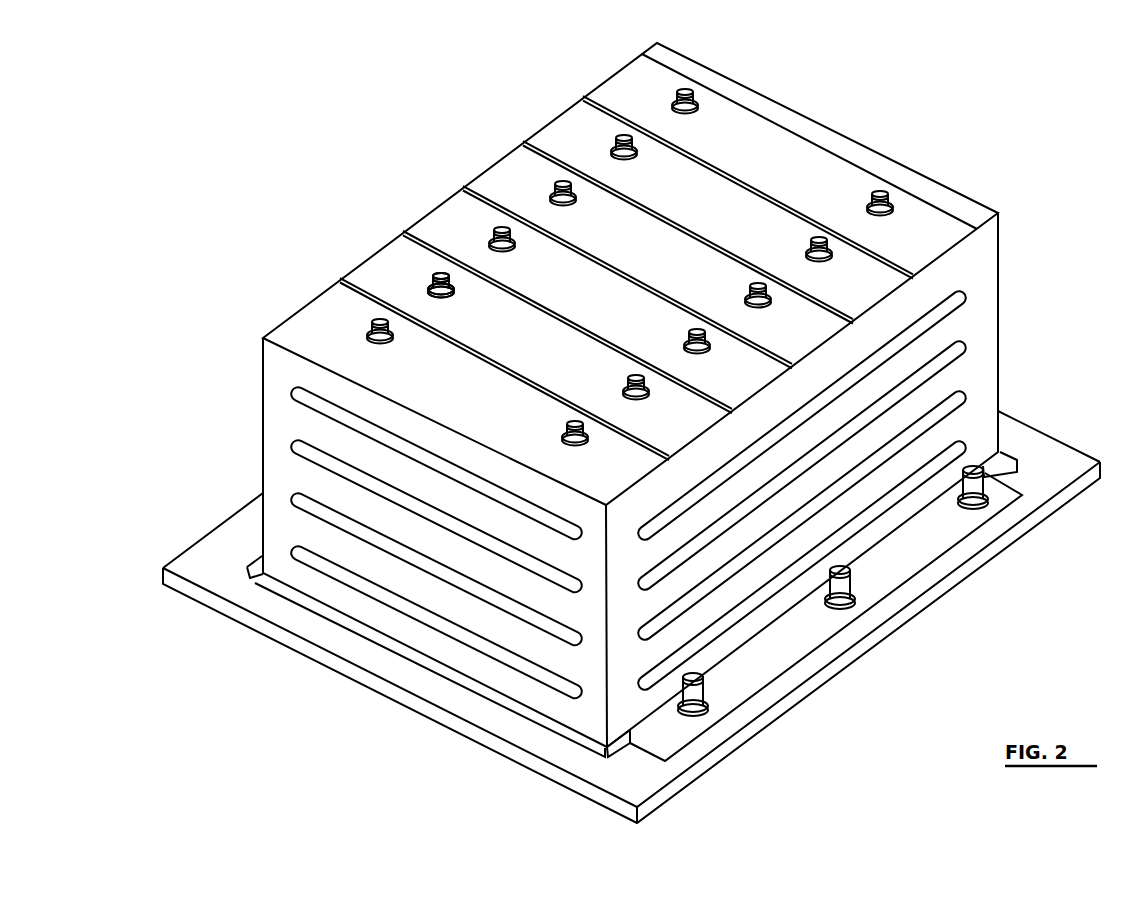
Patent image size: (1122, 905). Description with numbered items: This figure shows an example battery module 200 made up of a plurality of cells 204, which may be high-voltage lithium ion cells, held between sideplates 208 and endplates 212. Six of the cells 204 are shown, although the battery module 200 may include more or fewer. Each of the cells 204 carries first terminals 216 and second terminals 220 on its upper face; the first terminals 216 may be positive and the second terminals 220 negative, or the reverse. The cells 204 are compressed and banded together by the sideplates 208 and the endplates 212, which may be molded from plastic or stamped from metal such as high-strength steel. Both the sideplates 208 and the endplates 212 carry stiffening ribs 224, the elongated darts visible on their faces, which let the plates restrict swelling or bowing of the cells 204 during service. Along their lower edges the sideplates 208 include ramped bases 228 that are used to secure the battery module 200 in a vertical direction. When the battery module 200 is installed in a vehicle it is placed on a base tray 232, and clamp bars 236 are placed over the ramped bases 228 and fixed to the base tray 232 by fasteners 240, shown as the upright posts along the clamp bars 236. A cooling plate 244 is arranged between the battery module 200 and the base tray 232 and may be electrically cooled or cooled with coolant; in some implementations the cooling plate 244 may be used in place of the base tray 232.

The battery module 200 is at (333, 101).
The cells 204 is at (398, 265).
The sideplates 208 is at (988, 324).
The endplates 212 is at (275, 412).
The first terminals 216 is at (620, 393).
The second terminals 220 is at (456, 296).
The stiffening ribs 224 is at (298, 500).
The ramped bases 228 is at (254, 573).
The base tray 232 is at (320, 672).
The clamp bars 236 is at (762, 657).
The fasteners 240 is at (706, 706).
The cooling plate 244 is at (520, 712).